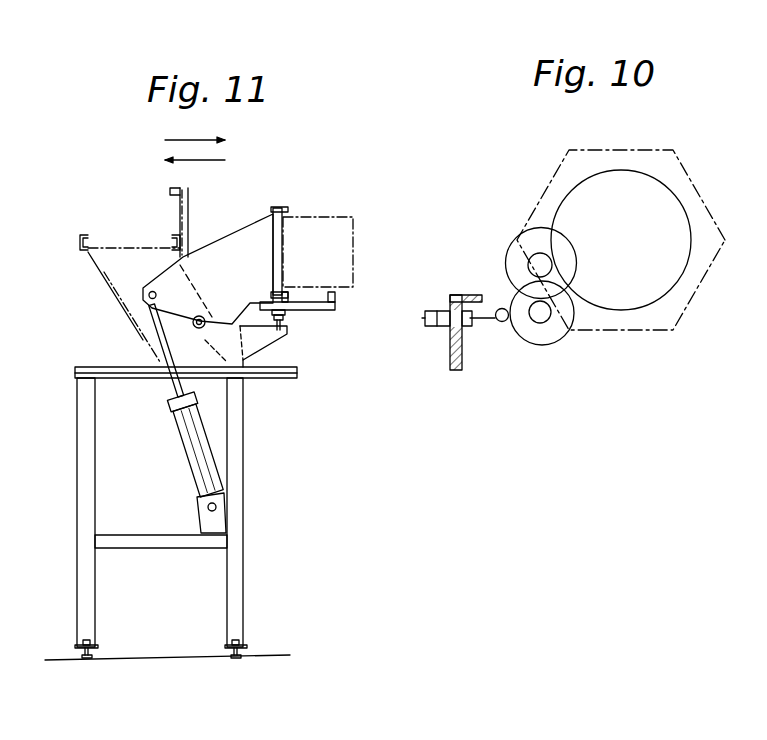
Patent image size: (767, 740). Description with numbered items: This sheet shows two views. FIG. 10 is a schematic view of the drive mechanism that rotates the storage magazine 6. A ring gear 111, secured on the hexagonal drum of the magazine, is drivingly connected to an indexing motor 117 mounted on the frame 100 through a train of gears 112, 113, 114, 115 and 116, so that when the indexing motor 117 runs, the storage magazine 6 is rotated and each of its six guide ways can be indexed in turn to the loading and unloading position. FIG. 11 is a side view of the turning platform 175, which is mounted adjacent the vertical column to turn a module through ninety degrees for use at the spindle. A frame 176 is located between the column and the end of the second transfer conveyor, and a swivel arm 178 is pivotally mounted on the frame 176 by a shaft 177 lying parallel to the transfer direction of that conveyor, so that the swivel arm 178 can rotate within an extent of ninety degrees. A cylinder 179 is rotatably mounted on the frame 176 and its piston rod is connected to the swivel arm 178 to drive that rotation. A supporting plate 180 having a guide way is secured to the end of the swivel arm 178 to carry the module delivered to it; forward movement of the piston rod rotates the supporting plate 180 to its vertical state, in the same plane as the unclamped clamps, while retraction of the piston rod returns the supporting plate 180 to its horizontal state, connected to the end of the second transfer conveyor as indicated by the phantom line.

In FIG. 10, the storage magazine 6 is at (679, 161).
In FIG. 10, the frame 100 is at (453, 365).
In FIG. 10, the ring gear 111 is at (626, 170).
In FIG. 10, the gear 112 is at (534, 254).
In FIG. 10, the gear 113 is at (512, 246).
In FIG. 10, the gear 114 is at (548, 323).
In FIG. 10, the gear 115 is at (526, 344).
In FIG. 10, the gear 116 is at (468, 328).
In FIG. 10, the indexing motor 117 is at (438, 310).
In FIG. 11, the turning platform 175 is at (195, 246).
In FIG. 11, the frame 176 is at (244, 548).
In FIG. 11, the shaft 177 is at (193, 324).
In FIG. 11, the swivel arm 178 is at (257, 217).
In FIG. 11, the cylinder 179 is at (186, 449).
In FIG. 11, the supporting plate 180 is at (281, 207).